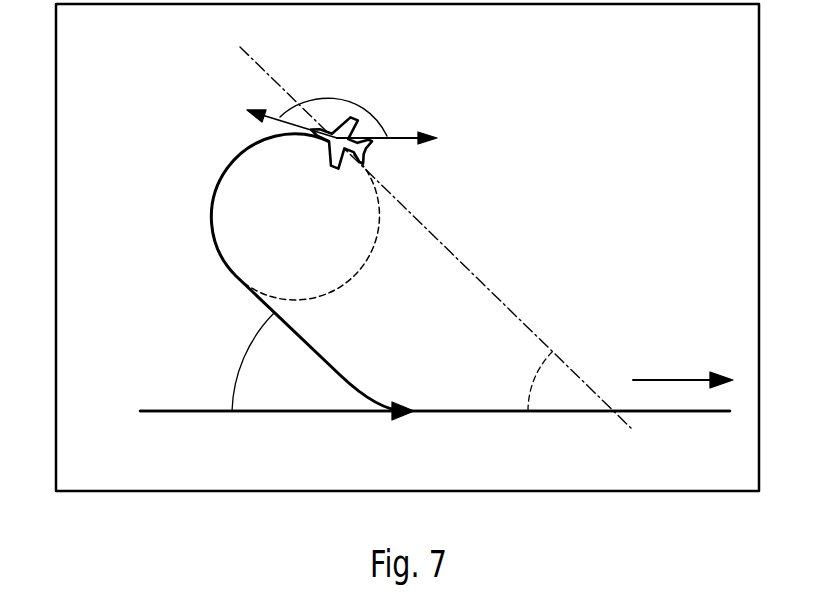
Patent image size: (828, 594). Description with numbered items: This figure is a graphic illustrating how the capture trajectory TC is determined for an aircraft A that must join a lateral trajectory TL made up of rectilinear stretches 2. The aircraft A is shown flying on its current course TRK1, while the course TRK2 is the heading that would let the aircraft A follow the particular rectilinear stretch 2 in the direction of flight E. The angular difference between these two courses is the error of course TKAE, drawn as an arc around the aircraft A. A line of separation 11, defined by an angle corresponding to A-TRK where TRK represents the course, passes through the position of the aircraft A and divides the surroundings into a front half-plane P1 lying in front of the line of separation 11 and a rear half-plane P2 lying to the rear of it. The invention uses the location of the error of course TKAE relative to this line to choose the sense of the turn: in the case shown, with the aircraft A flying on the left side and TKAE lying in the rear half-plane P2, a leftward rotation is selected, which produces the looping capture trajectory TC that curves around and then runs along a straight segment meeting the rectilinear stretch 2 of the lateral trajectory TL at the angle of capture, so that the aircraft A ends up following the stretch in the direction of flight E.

The rectilinear stretch 2 is at (188, 413).
The lateral trajectory TL is at (127, 410).
The capture trajectory TC is at (202, 185).
The line of separation 11 is at (498, 298).
The aircraft A is at (350, 128).
The current course TRK1 is at (280, 117).
The course making it possible to follow the rectilinear stretch TRK2 is at (397, 140).
The error of course TKAE is at (332, 100).
The front half-plane P1 is at (514, 226).
The rear half-plane P2 is at (458, 348).
The direction of flight E is at (675, 377).